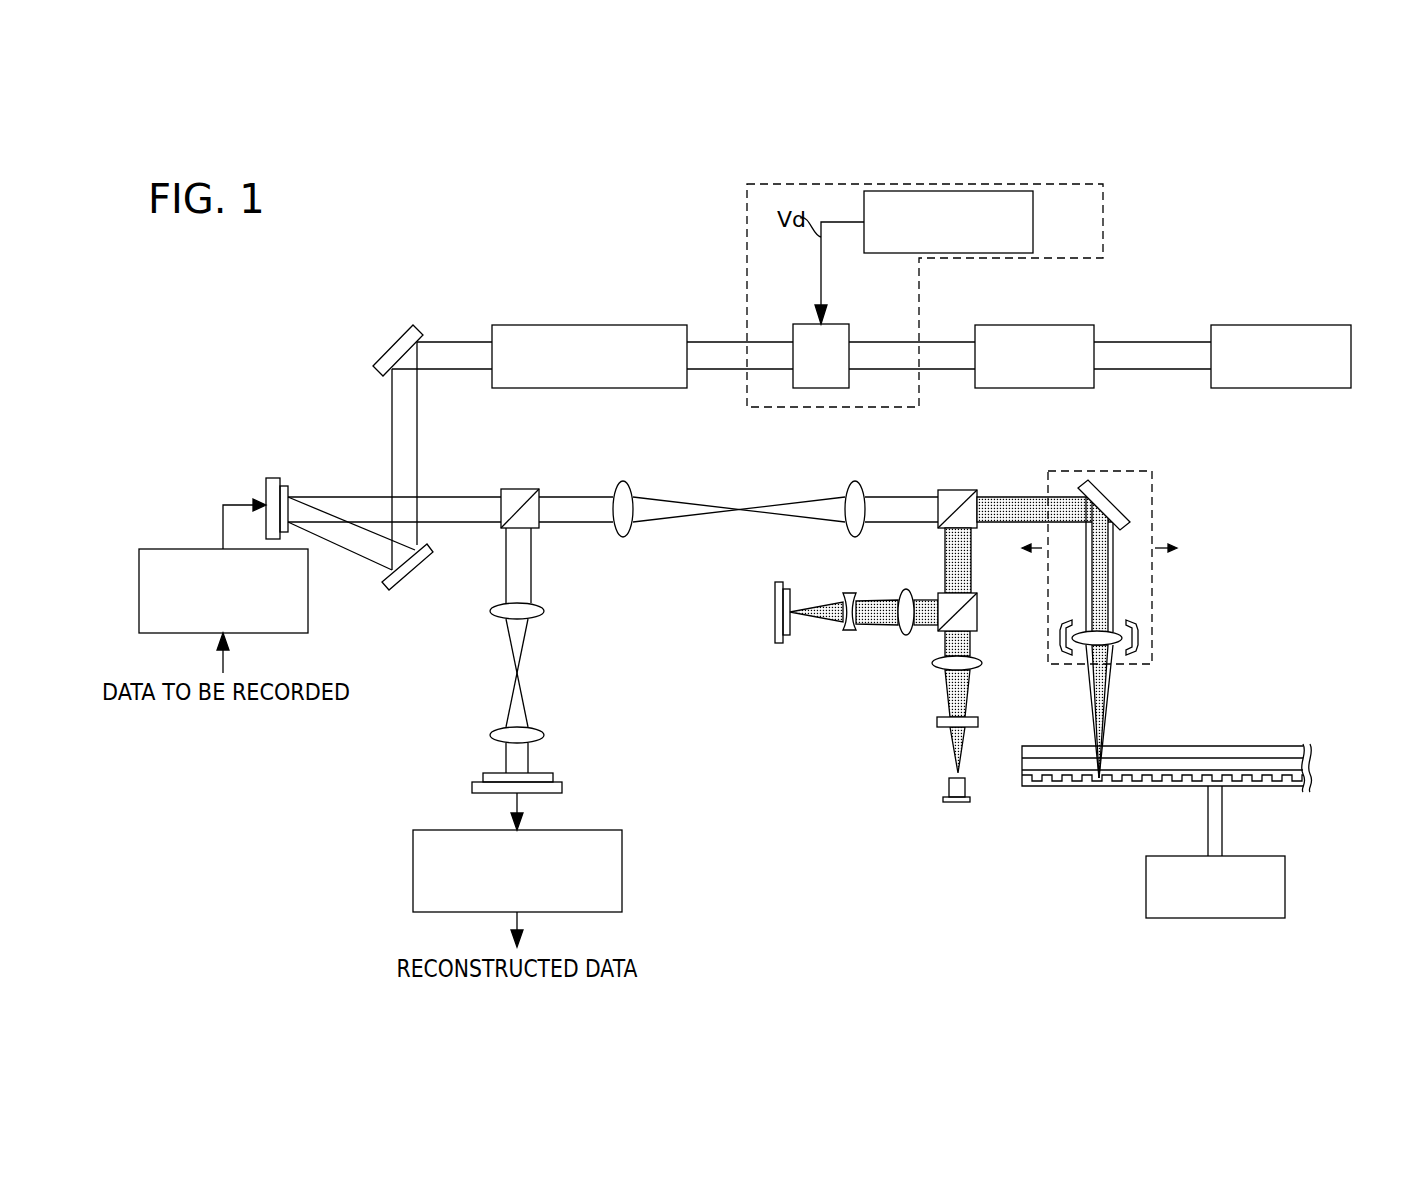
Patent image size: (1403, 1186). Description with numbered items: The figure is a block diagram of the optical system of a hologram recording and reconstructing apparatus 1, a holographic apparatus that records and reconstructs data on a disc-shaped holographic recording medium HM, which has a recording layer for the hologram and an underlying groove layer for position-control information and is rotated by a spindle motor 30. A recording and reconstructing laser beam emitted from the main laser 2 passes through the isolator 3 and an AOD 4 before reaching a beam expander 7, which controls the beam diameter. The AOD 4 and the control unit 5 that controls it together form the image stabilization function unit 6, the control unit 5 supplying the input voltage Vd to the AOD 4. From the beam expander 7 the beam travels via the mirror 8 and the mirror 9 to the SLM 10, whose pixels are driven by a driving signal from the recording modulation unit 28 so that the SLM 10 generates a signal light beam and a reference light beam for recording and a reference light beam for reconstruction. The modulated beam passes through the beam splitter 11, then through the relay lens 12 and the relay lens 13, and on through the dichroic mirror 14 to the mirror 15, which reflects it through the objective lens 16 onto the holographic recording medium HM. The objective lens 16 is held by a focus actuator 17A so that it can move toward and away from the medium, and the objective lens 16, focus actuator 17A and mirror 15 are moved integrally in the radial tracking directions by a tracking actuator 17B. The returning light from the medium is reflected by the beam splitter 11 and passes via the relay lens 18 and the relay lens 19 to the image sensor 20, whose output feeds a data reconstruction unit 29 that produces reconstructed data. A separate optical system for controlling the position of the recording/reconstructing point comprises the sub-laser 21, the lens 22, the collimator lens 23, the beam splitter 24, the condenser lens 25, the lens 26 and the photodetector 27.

The hologram recording and reconstructing apparatus 1 is at (310, 237).
The main laser 2 is at (1313, 325).
The isolator 3 is at (1063, 325).
The AOD 4 is at (803, 324).
The control unit 5 is at (1033, 210).
The image stabilization function unit 6 is at (1103, 210).
The beam expander 7 is at (548, 325).
The mirror 8 is at (397, 342).
The mirror 9 is at (395, 592).
The SLM 10 is at (277, 478).
The beam splitter 11 is at (520, 492).
The relay lens 12 is at (625, 480).
The relay lens 13 is at (858, 480).
The dichroic mirror 14 is at (960, 490).
The mirror 15 is at (1112, 503).
The objective lens 16 is at (1120, 630).
The focus actuator 17A is at (1072, 653).
The tracking actuator 17B is at (1152, 505).
The relay lens 18 is at (548, 607).
The relay lens 19 is at (545, 735).
The image sensor 20 is at (562, 785).
The sub-laser 21 is at (956, 803).
The lens 22 is at (978, 722).
The collimator lens 23 is at (985, 665).
The beam splitter 24 is at (938, 592).
The condenser lens 25 is at (905, 640).
The lens 26 is at (847, 634).
The photodetector 27 is at (775, 628).
The recording modulation unit 28 is at (175, 549).
The data reconstruction unit 29 is at (622, 855).
The spindle motor 30 is at (1285, 875).
The holographic recording medium HM is at (1123, 790).